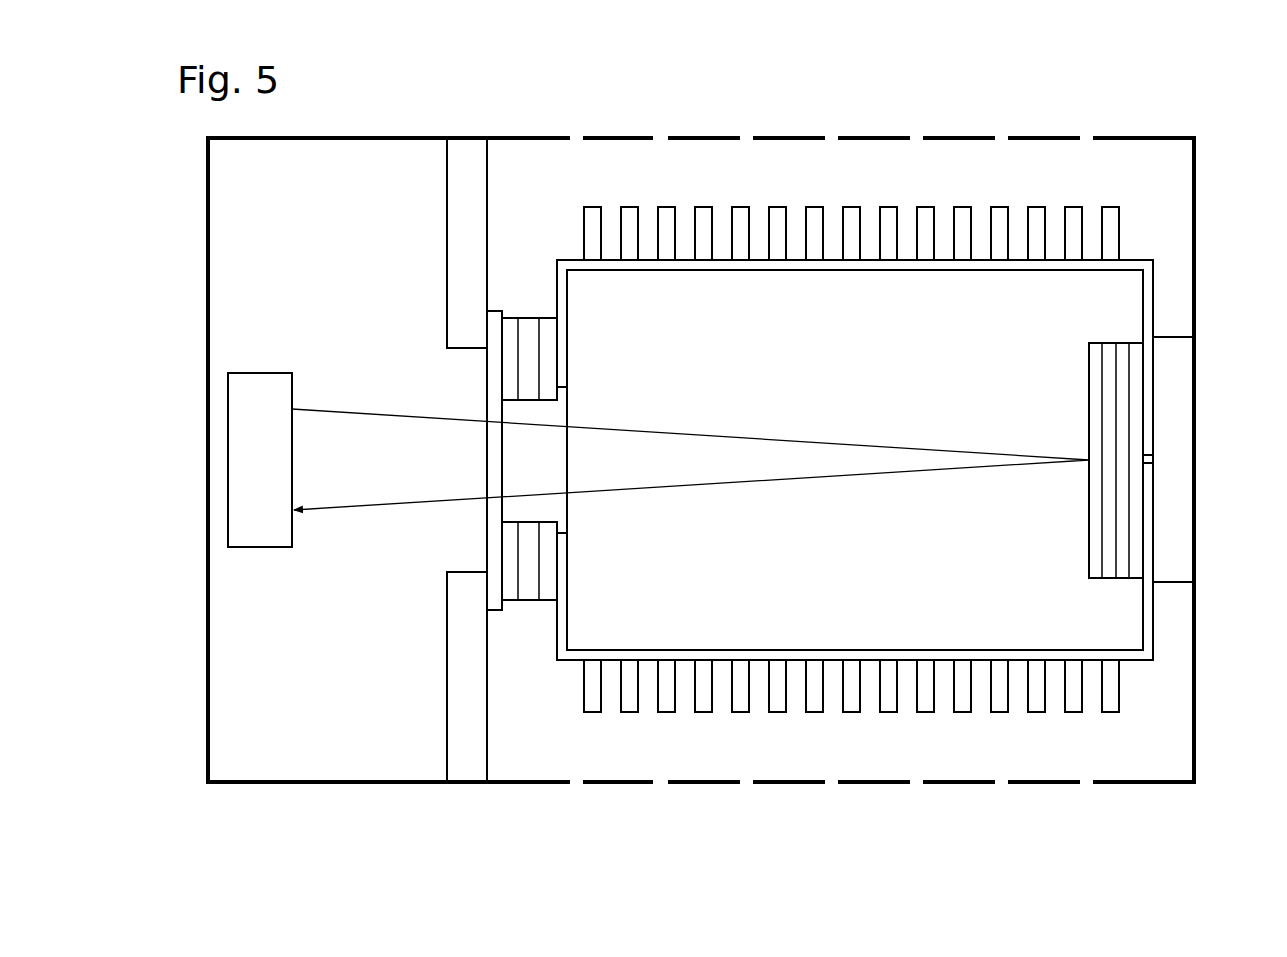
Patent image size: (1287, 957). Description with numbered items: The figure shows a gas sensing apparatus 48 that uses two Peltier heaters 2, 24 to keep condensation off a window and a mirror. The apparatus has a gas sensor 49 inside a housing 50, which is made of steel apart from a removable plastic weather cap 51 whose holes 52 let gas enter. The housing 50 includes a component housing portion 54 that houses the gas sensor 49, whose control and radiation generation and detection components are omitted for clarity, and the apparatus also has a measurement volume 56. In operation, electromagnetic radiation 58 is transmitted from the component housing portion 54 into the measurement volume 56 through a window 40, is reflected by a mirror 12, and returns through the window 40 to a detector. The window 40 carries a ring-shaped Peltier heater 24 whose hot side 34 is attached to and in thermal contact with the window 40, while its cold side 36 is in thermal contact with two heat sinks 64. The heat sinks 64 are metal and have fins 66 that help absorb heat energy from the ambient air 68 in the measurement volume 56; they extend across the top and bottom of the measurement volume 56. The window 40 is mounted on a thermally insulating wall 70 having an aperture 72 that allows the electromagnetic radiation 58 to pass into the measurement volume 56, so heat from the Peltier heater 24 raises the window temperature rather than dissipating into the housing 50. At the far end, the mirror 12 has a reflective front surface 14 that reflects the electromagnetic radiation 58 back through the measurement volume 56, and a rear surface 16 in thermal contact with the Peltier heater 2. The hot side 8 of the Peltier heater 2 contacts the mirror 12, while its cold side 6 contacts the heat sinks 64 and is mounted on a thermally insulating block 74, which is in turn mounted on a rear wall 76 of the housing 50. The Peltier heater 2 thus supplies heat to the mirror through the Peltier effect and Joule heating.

The Peltier heater 2 is at (1121, 582).
The cold side 6 is at (1137, 518).
The hot side 8 is at (1110, 362).
The mirror 12 is at (1090, 548).
The front surface 14 is at (1086, 408).
The rear surface 16 is at (1100, 376).
The ring-shaped Peltier heater 24 is at (523, 604).
The hot side 34 is at (508, 365).
The cold side 36 is at (550, 338).
The window 40 is at (490, 460).
The gas sensing apparatus 48 is at (1130, 806).
The gas sensor 49 is at (250, 445).
The housing 50 is at (371, 135).
The plastic weather cap 51 is at (962, 130).
The holes 52 is at (576, 138).
The component housing portion 54 is at (289, 685).
The measurement volume 56 is at (780, 358).
The electromagnetic radiation 58 is at (340, 409).
The heat sinks 64 is at (815, 204).
The fins 66 is at (885, 704).
The ambient air 68 is at (890, 196).
The thermally insulating wall 70 is at (460, 224).
The aperture 72 is at (462, 377).
The thermally insulating block 74 is at (1178, 437).
The rear wall 76 is at (1196, 598).